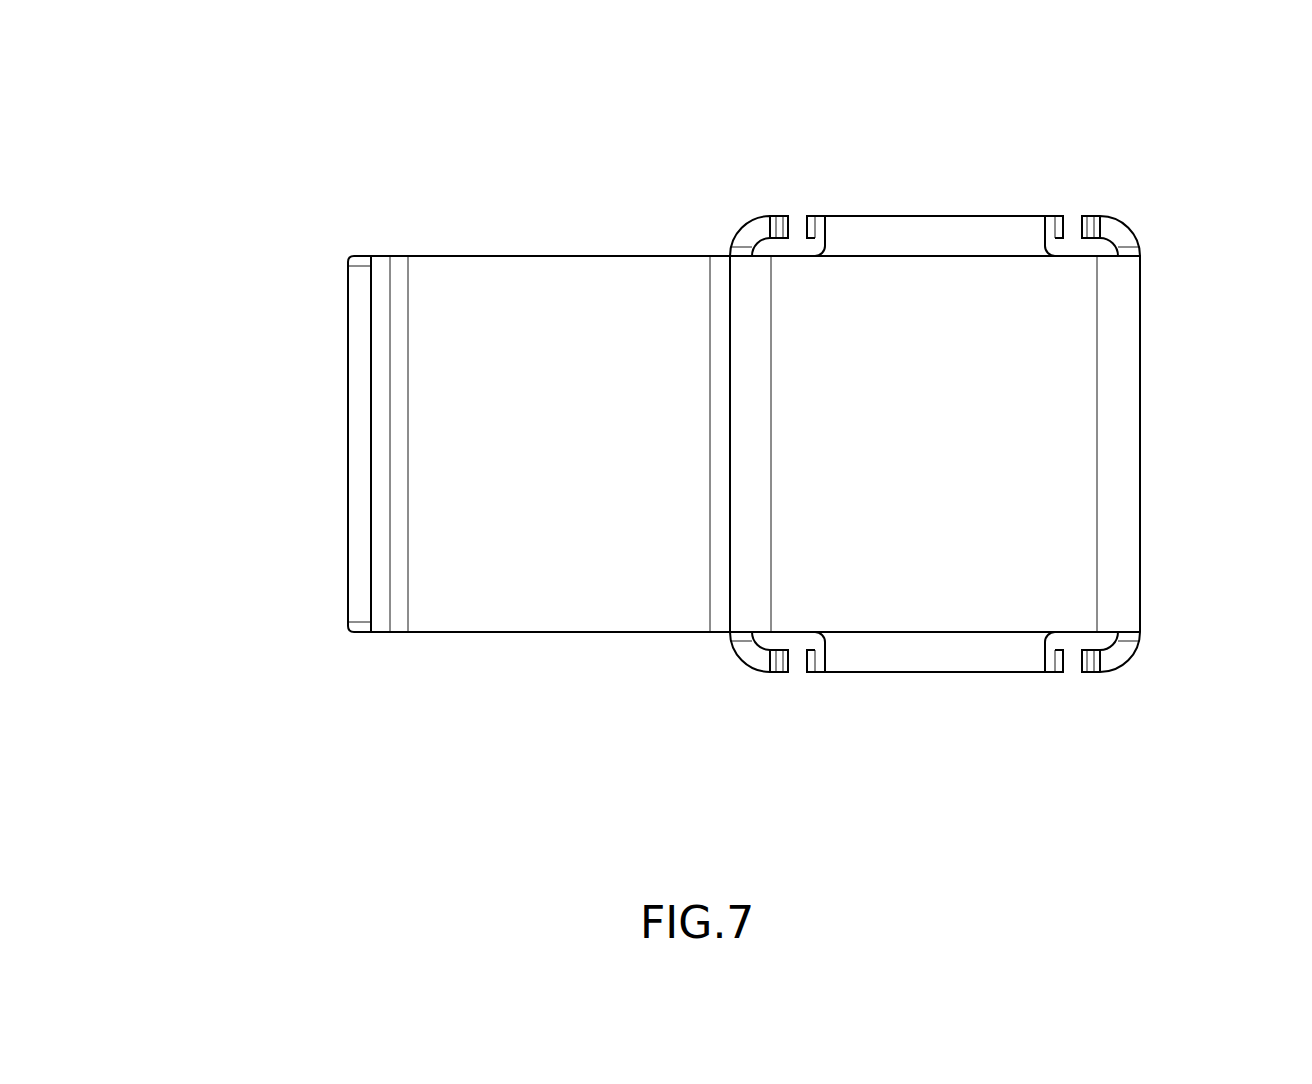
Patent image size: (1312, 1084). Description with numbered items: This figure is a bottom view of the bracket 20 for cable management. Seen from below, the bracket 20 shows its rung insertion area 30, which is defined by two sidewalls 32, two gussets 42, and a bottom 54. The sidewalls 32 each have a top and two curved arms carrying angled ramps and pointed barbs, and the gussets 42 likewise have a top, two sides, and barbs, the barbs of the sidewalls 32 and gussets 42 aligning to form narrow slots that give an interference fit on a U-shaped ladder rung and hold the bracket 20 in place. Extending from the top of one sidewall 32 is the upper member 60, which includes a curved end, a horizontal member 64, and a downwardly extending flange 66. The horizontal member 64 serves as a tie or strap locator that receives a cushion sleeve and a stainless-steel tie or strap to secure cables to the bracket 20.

The bracket 20 is at (262, 134).
The rung insertion area 30 is at (1145, 135).
The sidewall 32 is at (1118, 405).
The gusset 42 is at (926, 226).
The bottom 54 is at (1033, 518).
The upper member 60 is at (295, 540).
The horizontal member 64 is at (540, 285).
The downwardly extending flange 66 is at (360, 388).